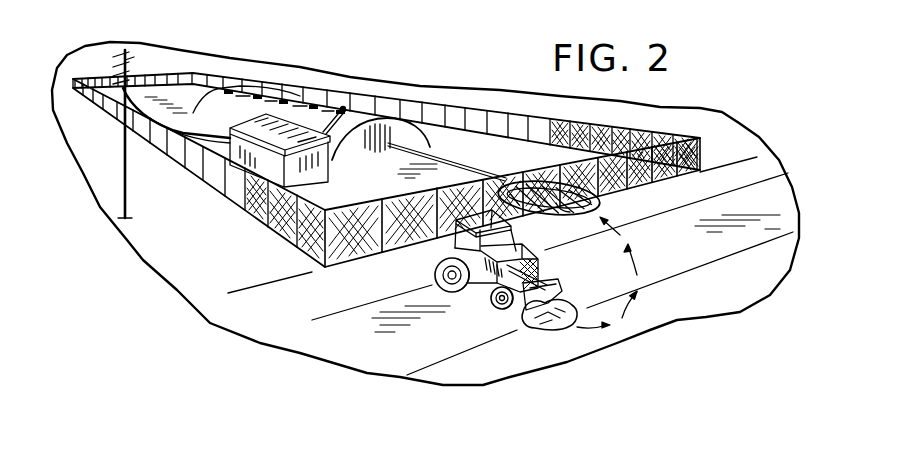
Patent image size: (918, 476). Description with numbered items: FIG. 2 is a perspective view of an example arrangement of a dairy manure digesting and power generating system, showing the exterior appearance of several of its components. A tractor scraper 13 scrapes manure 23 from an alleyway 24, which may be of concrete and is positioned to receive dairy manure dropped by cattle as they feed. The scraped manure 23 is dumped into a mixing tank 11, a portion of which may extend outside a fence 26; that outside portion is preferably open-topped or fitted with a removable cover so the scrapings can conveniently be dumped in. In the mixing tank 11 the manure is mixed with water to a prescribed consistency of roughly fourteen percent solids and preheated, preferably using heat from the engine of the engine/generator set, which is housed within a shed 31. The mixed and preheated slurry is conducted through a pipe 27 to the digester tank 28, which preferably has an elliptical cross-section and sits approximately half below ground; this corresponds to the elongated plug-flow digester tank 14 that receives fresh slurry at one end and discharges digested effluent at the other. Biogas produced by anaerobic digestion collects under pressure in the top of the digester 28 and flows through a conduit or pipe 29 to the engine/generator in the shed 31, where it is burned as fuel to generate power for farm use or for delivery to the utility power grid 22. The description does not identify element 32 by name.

The mixing tank 11 is at (603, 197).
The tractor scraper 13 is at (493, 281).
The plug-flow digester tank 14 is at (253, 93).
The utility power grid 22 is at (130, 50).
The manure 23 is at (575, 297).
The alleyway 24 is at (685, 251).
The fence 26 is at (739, 123).
The pipe 27 is at (466, 163).
The digester tank 28 is at (388, 128).
The conduit or pipe 29 is at (338, 110).
The shed 31 is at (318, 163).
The digester inlet 32 is at (558, 217).